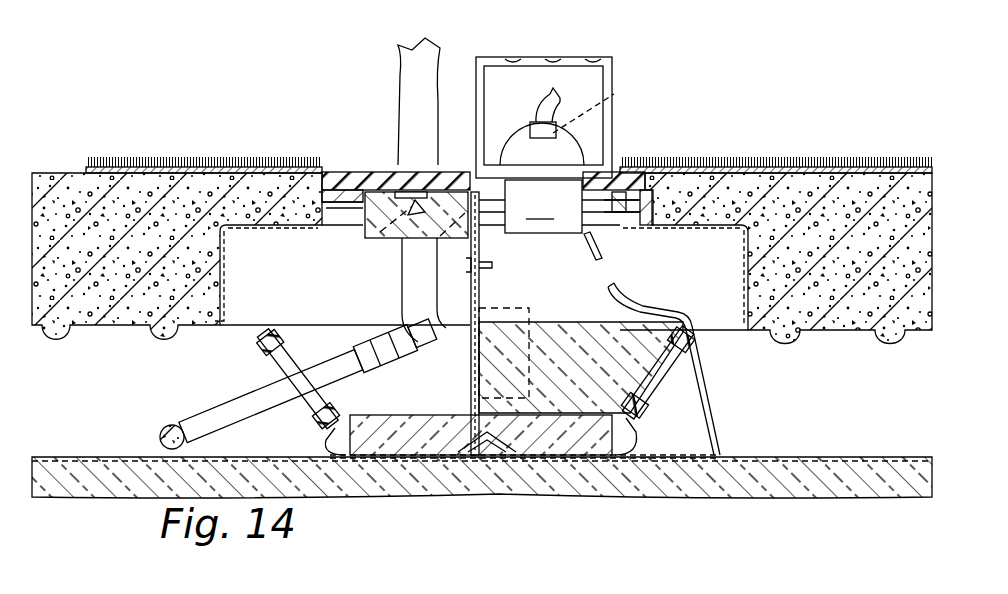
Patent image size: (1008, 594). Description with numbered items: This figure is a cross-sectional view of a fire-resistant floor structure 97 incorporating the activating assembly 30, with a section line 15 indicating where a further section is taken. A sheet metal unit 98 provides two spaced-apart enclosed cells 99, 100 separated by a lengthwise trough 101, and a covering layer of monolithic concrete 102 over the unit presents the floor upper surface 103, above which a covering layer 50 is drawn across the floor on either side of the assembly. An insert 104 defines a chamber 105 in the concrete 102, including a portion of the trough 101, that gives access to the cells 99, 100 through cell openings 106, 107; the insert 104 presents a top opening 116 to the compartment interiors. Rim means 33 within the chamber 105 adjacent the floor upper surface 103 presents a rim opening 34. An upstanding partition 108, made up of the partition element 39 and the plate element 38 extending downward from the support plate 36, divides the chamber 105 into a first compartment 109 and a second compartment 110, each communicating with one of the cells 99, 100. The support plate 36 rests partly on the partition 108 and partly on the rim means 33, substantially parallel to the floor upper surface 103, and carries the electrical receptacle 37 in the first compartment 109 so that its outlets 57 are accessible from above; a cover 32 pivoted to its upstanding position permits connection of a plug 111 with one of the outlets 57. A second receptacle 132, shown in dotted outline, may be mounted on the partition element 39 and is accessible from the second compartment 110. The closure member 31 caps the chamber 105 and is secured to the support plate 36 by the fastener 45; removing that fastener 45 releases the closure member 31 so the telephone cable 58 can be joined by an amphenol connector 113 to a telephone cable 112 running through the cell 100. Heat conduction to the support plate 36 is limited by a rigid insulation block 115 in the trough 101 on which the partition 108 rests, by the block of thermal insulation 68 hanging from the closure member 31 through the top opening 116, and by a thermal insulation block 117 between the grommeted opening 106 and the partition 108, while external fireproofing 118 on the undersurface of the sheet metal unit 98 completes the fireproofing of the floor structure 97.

The section line 15- 15 is at (545, 56).
The activating assembly 30 is at (620, 134).
The closure member 31 is at (362, 166).
The covers 32 is at (612, 62).
The rim means 33 is at (668, 170).
The rim opening 34 is at (335, 178).
The support plate 36 is at (592, 234).
The receptacle 37 is at (559, 206).
The plate element 38 is at (482, 286).
The partition element 39 is at (470, 366).
The fastener 45 is at (498, 182).
The carpet 50 is at (800, 166).
The outlets 57 is at (414, 230).
The telephone cable 58 is at (428, 56).
The block of thermal insulation 68 is at (404, 280).
The floor structure 97 is at (300, 74).
The sheet metal unit 98 is at (830, 461).
The cell 99 is at (858, 412).
The cell 100 is at (120, 370).
The lengthwise trough 101 is at (540, 466).
The covering layer of monolithic concrete 102 is at (112, 172).
The floor upper surface 103 is at (58, 172).
The insert 104 is at (222, 172).
The chamber 105 is at (690, 242).
The cell opening 106 is at (660, 400).
The cell opening 107 is at (304, 424).
The upstanding partition 108 is at (470, 388).
The first compartment 109 is at (710, 294).
The second compartment 110 is at (290, 299).
The plug 111 is at (614, 96).
The telephone cable 112 is at (160, 434).
The amphenol connector 113 is at (272, 384).
The rigid insulation block 115 is at (606, 462).
The top opening 116 is at (364, 232).
The thermal insulation block 117 is at (652, 348).
The external fireproofing 118 is at (748, 494).
The second receptacle 132 is at (538, 312).